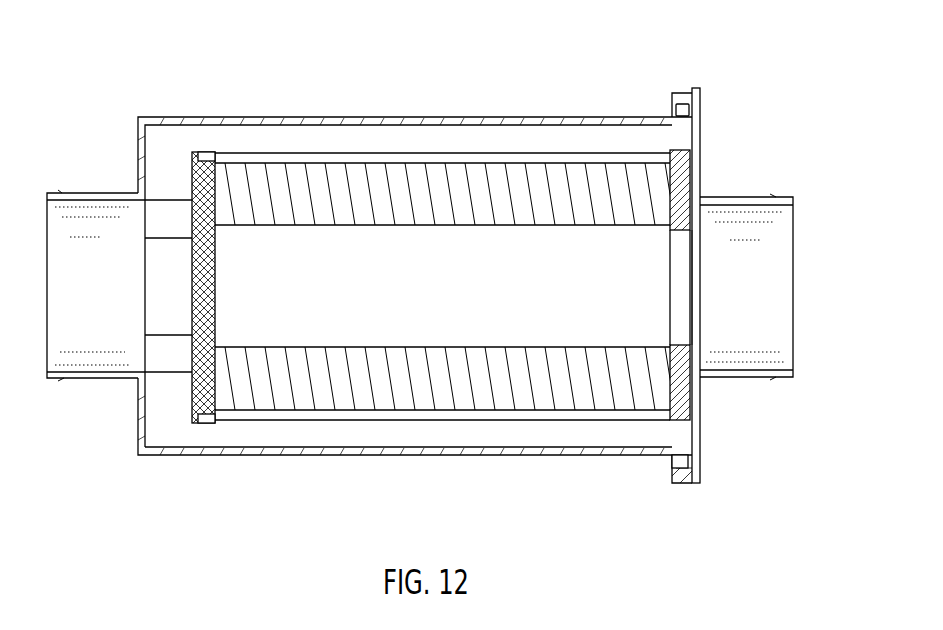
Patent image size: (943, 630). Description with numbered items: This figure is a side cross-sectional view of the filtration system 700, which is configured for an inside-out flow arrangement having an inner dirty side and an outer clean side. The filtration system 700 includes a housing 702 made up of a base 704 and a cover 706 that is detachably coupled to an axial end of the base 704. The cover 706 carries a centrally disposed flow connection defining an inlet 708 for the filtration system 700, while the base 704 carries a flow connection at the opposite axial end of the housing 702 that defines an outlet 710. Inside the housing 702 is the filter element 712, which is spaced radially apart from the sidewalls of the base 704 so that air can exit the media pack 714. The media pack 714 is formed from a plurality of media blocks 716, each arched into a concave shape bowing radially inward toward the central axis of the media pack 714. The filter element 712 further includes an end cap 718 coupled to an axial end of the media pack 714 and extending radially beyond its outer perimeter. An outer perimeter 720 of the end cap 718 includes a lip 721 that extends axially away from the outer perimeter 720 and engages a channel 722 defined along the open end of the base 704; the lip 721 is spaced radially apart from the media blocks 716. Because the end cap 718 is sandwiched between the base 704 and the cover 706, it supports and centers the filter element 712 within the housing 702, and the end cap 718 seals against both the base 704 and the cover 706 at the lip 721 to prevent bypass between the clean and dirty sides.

The filtration system 700 is at (90, 85).
The housing 702 is at (440, 116).
The base 704 is at (583, 456).
The cover 706 is at (701, 410).
The inlet 708 is at (765, 196).
The outlet 710 is at (104, 378).
The filter element 712 is at (587, 138).
The media pack 714 is at (291, 390).
The media blocks 716 is at (532, 390).
The end cap 718 is at (691, 441).
The outer perimeter 720 is at (688, 479).
The lip 721 is at (672, 108).
The channel 722 is at (664, 462).